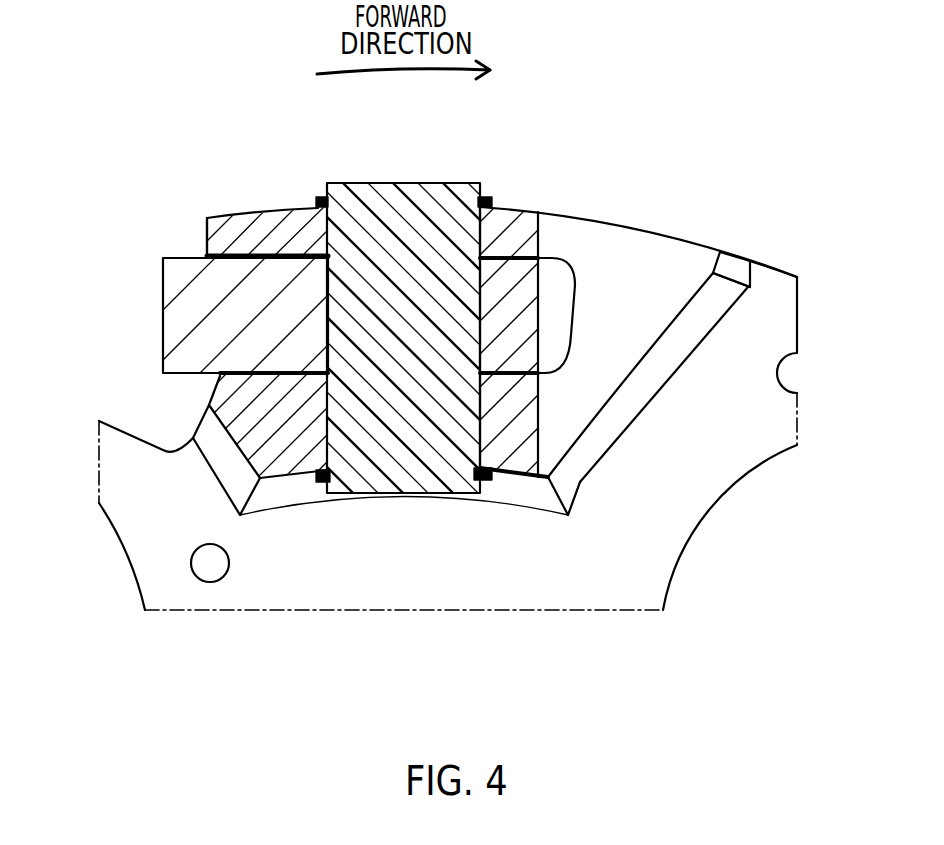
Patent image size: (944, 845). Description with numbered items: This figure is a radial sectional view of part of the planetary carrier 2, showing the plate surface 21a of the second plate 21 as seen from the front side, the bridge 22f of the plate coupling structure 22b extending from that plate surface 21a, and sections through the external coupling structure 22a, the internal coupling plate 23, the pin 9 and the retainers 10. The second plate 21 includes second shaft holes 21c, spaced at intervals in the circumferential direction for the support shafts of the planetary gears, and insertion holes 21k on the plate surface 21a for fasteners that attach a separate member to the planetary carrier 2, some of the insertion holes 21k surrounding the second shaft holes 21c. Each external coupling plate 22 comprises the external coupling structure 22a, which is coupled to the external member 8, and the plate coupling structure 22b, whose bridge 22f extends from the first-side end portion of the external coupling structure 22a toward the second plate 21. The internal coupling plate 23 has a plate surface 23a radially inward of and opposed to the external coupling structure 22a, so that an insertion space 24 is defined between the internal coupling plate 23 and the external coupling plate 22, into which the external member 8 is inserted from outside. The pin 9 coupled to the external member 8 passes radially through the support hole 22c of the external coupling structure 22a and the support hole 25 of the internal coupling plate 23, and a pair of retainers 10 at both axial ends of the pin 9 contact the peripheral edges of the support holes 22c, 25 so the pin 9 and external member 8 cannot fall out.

The planetary carrier 2 is at (768, 150).
The external member 8 is at (162, 292).
The pin 9 is at (403, 192).
The retainers 10 is at (484, 198).
The second plate 21 is at (606, 614).
The plate surface 21a is at (772, 298).
The second shaft holes 21c is at (120, 545).
The insertion holes 21k is at (216, 582).
The external coupling plate 22 is at (287, 203).
The external coupling structure 22a is at (258, 208).
The plate coupling structure 22b is at (708, 204).
The support hole 22c is at (478, 236).
The bridge 22f is at (612, 268).
The internal coupling plate 23 is at (287, 478).
The plate surface 23a is at (255, 372).
The insertion spaces 24 is at (553, 290).
The support hole 25 is at (480, 427).